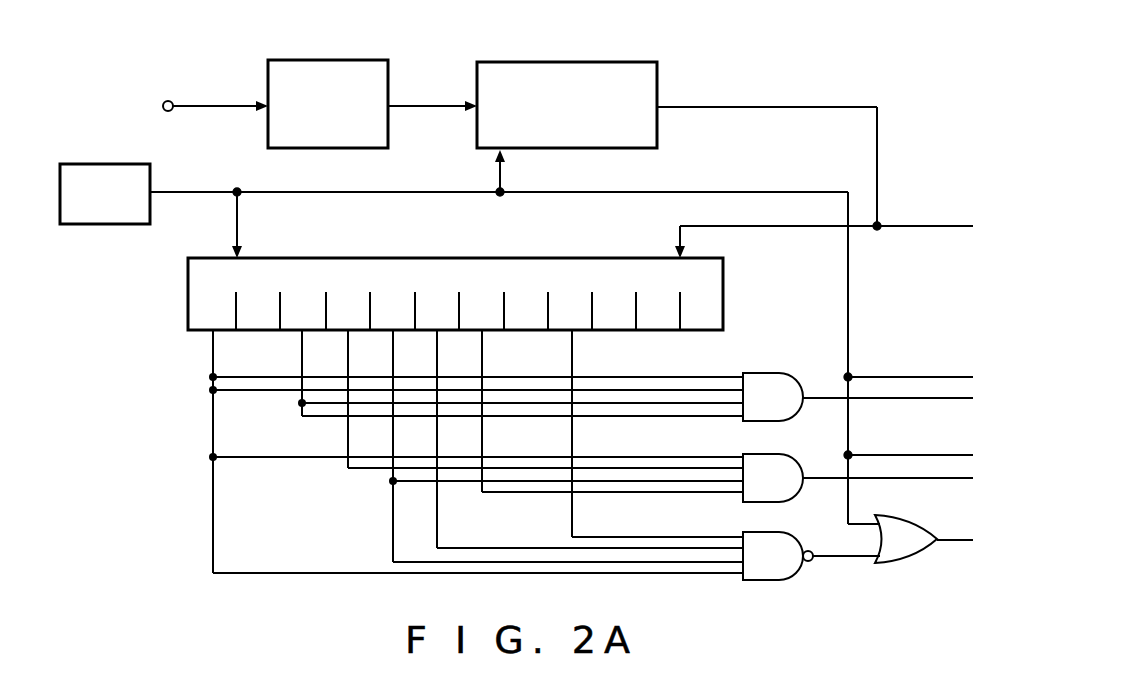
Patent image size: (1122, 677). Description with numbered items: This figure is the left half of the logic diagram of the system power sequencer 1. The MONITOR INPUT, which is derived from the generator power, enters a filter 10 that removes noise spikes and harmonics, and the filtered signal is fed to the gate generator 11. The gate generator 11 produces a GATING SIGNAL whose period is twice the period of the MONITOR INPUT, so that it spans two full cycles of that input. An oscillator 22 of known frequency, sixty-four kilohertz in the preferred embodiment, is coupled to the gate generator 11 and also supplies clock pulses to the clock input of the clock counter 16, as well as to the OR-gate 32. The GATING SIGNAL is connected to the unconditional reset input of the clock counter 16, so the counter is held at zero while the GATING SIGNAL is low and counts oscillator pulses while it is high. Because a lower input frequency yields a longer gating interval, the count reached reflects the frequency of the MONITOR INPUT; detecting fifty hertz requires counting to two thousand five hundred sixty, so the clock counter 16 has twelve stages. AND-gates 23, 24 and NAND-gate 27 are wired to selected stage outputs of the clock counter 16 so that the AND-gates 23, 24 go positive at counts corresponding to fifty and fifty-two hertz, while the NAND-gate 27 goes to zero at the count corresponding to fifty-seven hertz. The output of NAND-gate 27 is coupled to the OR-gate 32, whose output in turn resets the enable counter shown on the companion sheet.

The system power sequencer 1 is at (126, 58).
The filter 10 is at (352, 61).
The gate generator 11 is at (625, 62).
The clock counter 16 is at (573, 258).
The oscillator 22 is at (108, 226).
The AND-gate 23 is at (780, 374).
The AND-gate 24 is at (780, 456).
The NAND-gate 27 is at (784, 534).
The OR-gate 32 is at (912, 516).